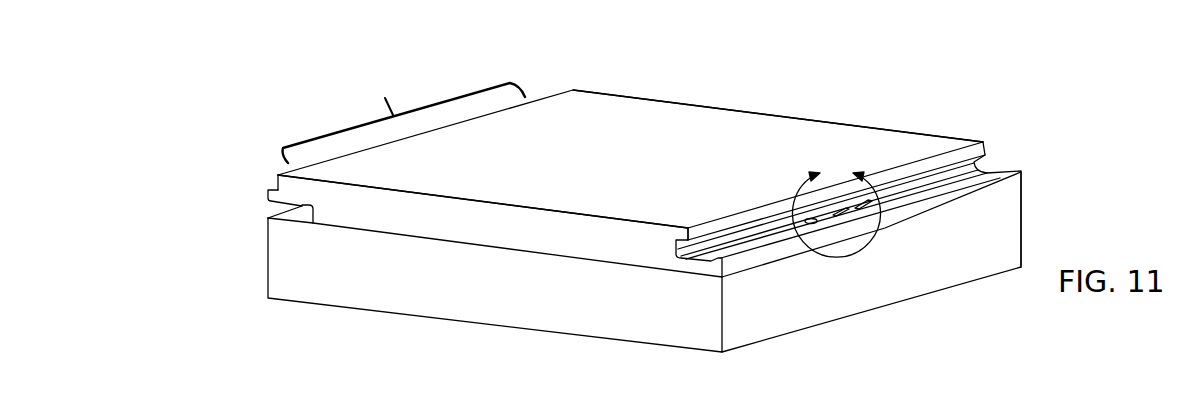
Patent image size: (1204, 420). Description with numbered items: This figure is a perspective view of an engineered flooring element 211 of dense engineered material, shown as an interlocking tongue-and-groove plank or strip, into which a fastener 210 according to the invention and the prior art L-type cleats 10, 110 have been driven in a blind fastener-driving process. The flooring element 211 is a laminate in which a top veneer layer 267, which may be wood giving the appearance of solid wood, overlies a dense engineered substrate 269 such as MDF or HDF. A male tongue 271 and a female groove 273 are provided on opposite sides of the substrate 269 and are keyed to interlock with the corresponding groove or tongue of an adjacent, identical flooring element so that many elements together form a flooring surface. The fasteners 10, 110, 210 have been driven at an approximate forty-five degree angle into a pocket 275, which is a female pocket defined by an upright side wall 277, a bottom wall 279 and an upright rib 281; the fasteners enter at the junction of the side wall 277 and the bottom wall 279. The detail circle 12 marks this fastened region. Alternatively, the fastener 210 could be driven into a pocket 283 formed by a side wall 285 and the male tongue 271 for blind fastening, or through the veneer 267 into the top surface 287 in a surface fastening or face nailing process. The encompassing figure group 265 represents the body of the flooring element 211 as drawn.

The prior art mechanical fastener 10 is at (843, 213).
The detail view circle 12 is at (837, 209).
The prior art mechanical fastener 110 is at (868, 208).
The mechanical fastener 210 is at (811, 224).
The flooring element 211 is at (404, 122).
The base block 265 is at (372, 273).
The top veneer layer 267 is at (487, 200).
The dense engineered substrate 269 is at (548, 232).
The male tongue 271 is at (267, 202).
The female groove 273 is at (892, 198).
The pocket 275 is at (912, 188).
The upright side wall 277 is at (950, 170).
The bottom wall 279 is at (988, 168).
The upright rib 281 is at (1022, 170).
The pocket 283 is at (277, 188).
The side wall 285 is at (279, 172).
The top surface 287 is at (613, 118).